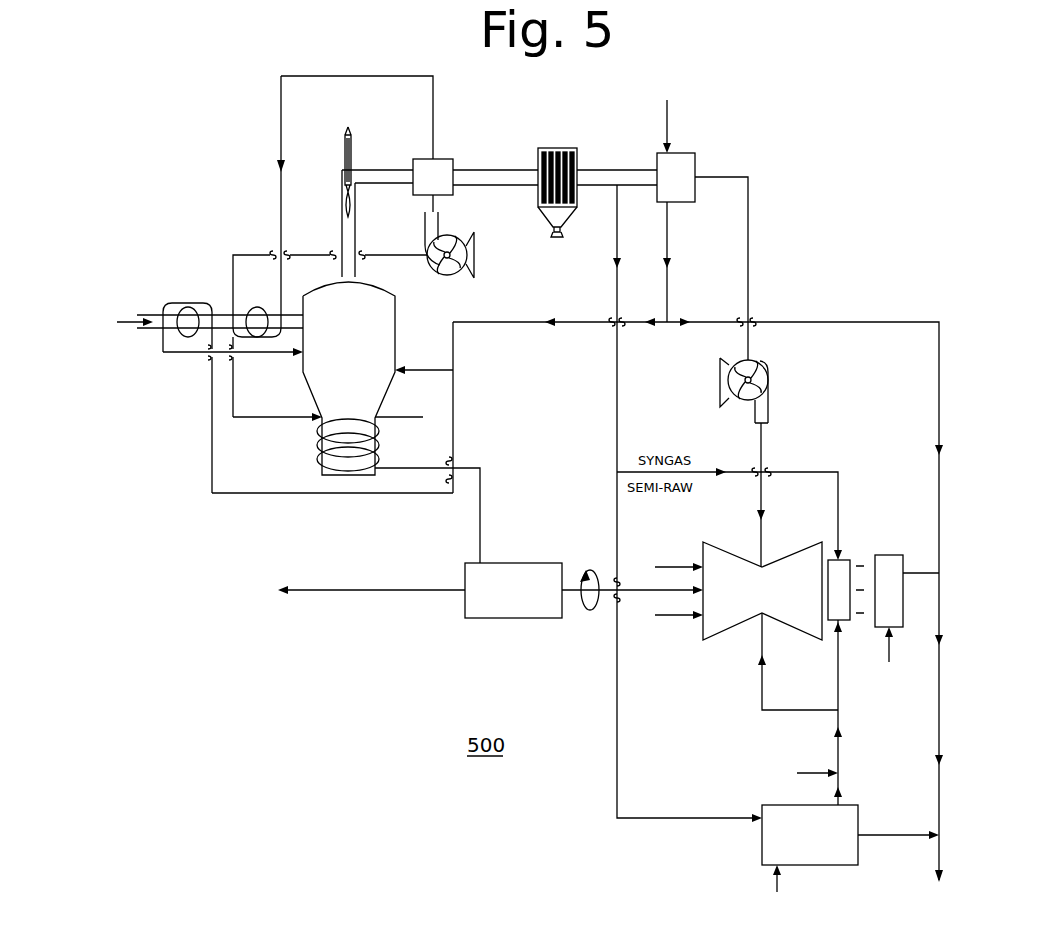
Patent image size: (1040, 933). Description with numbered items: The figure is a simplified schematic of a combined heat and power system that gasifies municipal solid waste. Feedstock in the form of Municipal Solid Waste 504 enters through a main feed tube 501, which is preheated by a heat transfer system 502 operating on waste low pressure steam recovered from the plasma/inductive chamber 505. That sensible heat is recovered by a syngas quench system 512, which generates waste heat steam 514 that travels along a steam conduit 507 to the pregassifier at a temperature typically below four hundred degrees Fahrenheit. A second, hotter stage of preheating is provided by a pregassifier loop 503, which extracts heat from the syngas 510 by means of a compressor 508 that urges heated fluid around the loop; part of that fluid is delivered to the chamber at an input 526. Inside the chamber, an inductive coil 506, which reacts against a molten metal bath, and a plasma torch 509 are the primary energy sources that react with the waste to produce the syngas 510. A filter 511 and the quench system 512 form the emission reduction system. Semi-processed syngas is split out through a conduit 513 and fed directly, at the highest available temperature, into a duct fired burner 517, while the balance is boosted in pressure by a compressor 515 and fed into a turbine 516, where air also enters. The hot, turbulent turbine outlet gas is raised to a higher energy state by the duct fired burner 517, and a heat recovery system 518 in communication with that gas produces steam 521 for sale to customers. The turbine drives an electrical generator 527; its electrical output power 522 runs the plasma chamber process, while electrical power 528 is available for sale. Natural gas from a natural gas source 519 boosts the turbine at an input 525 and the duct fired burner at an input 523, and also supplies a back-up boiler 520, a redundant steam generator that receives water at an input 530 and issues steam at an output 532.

The main feed tube 501 is at (155, 330).
The heat transfer system 502 is at (190, 355).
The pregassifier loop 503 is at (257, 308).
The Municipal Solid Waste 504 is at (118, 320).
The plasma/inductive chamber 505 is at (395, 323).
The inductive coil 506 is at (385, 417).
The steam conduit 507 is at (373, 495).
The compressor 508 is at (473, 247).
The plasma torch 509 is at (345, 150).
The syngas 510 is at (498, 170).
The filter 511 is at (540, 147).
The syngas quench system 512 is at (680, 150).
The conduit 513 is at (615, 293).
The waste heat steam 514 is at (667, 247).
The compressor 515 is at (757, 367).
The turbine 516 is at (725, 512).
The duct fired burner 517 is at (853, 560).
The heat recovery system 518 is at (893, 555).
The natural gas source 519 is at (720, 763).
The back-up boiler 520 is at (813, 865).
The steam 521 is at (942, 750).
The electrical output power 522 is at (427, 505).
The input 523 is at (371, 590).
The input 525 is at (760, 640).
The input 526 is at (277, 405).
The electrical generator 527 is at (515, 563).
The electrical power 528 is at (838, 693).
The input 530 is at (775, 885).
The output 532 is at (862, 835).